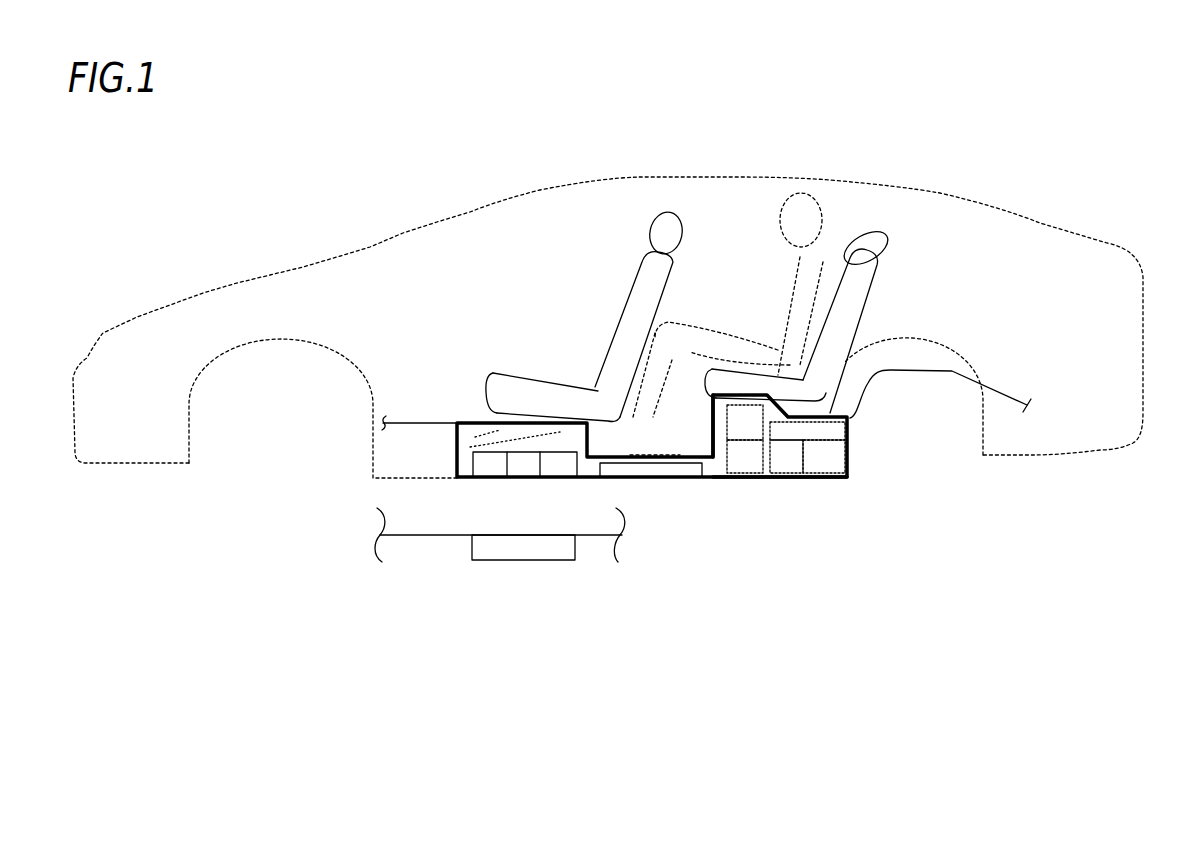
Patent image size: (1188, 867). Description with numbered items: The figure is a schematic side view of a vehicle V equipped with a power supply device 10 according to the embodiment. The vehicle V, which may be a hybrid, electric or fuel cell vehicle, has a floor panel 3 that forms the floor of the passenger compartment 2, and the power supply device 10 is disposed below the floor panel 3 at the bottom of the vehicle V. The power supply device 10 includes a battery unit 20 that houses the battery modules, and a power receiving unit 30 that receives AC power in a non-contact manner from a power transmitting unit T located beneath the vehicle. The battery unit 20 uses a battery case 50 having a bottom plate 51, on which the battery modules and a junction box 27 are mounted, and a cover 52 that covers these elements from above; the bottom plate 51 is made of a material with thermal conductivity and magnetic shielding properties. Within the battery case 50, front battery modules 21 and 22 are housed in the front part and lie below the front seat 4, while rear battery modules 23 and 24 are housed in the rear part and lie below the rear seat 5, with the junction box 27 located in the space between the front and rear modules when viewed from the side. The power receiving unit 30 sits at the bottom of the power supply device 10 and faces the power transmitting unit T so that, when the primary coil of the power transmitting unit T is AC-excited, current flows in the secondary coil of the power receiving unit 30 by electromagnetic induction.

The vehicle V is at (872, 173).
The passenger compartment 2 is at (738, 279).
The floor panel 3 is at (441, 423).
The front seat 4 is at (553, 376).
The rear seat 5 is at (857, 330).
The power supply device 10 is at (613, 481).
The battery unit 20 is at (613, 481).
The front battery module 21 is at (560, 436).
The front battery module 22 is at (450, 431).
The rear battery module 23 is at (732, 481).
The rear battery module 24 is at (794, 514).
The junction box 27 is at (690, 480).
The power receiving unit 30 is at (466, 478).
The battery case 50 is at (841, 457).
The bottom plate 51 is at (820, 475).
The cover 52 is at (850, 427).
The power transmitting unit T is at (535, 563).